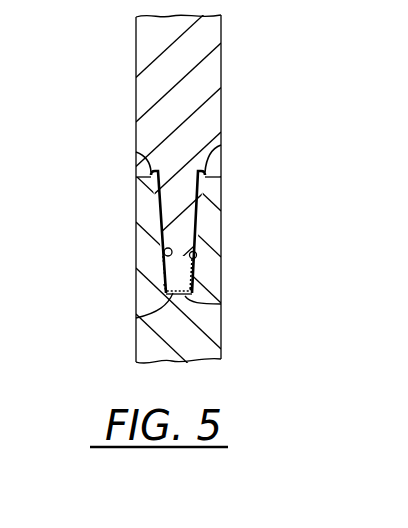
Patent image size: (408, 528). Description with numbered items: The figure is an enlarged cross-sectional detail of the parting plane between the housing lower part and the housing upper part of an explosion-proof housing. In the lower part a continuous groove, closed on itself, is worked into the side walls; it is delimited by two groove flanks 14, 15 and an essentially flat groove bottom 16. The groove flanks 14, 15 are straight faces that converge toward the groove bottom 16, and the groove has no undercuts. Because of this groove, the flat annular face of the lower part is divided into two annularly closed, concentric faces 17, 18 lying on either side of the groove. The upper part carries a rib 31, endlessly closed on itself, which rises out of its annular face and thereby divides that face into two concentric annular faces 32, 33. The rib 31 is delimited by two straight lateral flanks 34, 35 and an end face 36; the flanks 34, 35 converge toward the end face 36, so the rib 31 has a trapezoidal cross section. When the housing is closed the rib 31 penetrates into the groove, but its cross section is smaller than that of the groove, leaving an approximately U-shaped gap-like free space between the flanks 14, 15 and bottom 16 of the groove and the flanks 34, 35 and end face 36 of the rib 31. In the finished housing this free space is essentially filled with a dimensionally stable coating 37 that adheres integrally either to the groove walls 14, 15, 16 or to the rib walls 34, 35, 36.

The groove flank 14 is at (197, 255).
The groove flank 15 is at (164, 251).
The groove bottom 16 is at (140, 318).
The annularly closed face 17 is at (206, 177).
The annularly closed face 18 is at (140, 188).
The rib 31 is at (201, 213).
The annular face 32 is at (222, 165).
The annular face 33 is at (137, 162).
The lateral flank 34 is at (194, 273).
The lateral flank 35 is at (162, 273).
The end face 36 is at (196, 305).
The dimensionally stable coating 37 is at (165, 288).